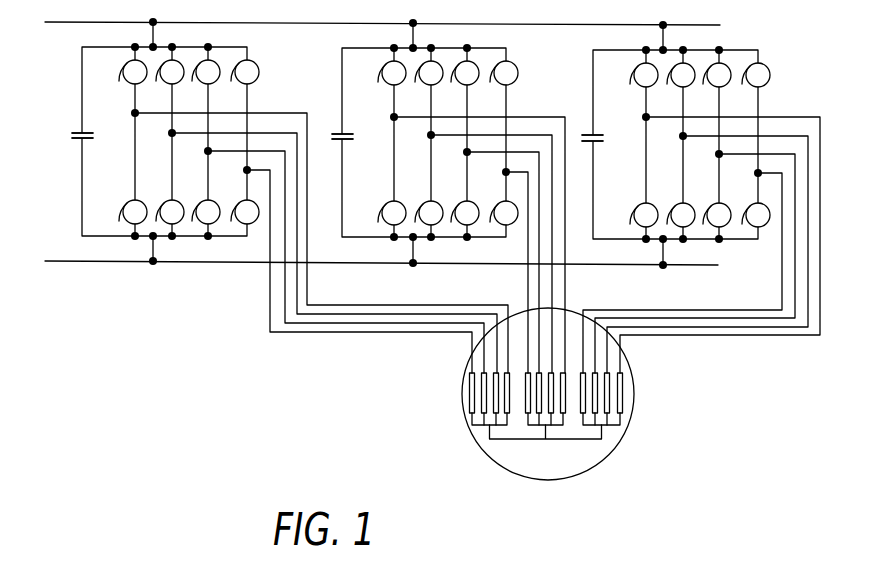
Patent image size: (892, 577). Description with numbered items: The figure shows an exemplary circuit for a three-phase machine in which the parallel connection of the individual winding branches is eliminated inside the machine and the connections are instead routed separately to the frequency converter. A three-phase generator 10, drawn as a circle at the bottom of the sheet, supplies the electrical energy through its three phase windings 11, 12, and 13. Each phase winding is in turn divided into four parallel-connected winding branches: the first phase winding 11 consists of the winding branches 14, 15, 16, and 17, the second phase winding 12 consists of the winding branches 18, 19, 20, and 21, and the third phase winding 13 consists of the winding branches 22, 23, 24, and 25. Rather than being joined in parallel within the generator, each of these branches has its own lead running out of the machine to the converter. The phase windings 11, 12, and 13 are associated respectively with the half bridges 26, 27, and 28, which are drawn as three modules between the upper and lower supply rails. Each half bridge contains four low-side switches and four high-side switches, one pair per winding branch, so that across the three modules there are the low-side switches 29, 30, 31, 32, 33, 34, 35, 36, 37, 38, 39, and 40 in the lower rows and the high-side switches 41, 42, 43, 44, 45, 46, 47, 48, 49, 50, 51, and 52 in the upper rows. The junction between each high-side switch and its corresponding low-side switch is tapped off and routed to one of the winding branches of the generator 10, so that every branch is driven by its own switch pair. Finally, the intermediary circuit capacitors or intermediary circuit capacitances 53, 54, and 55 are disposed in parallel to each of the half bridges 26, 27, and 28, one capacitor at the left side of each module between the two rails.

The three-phase generator 10 is at (730, 413).
The phase winding 11 is at (456, 422).
The phase winding 12 is at (554, 390).
The phase winding 13 is at (636, 417).
The winding branch 14 is at (470, 415).
The winding branch 15 is at (482, 402).
The winding branch 16 is at (494, 393).
The winding branch 17 is at (505, 387).
The winding branch 18 is at (563, 411).
The winding branch 19 is at (552, 371).
The winding branch 20 is at (539, 371).
The winding branch 21 is at (527, 414).
The winding branch 22 is at (586, 391).
The winding branch 23 is at (598, 398).
The winding branch 24 is at (610, 406).
The winding branch 25 is at (622, 413).
The half bridge 26 is at (165, 141).
The half bridge 27 is at (425, 143).
The half bridge 28 is at (676, 145).
The low-side switch 29 is at (129, 200).
The low-side switch 30 is at (165, 200).
The low-side switch 31 is at (202, 200).
The low-side switch 32 is at (241, 200).
The low-side switch 33 is at (388, 201).
The low-side switch 34 is at (425, 201).
The low-side switch 35 is at (461, 201).
The low-side switch 36 is at (500, 201).
The low-side switch 37 is at (639, 204).
The low-side switch 38 is at (676, 204).
The low-side switch 39 is at (713, 204).
The low-side switch 40 is at (752, 204).
The high-side switch 41 is at (128, 85).
The high-side switch 42 is at (165, 85).
The high-side switch 43 is at (202, 85).
The high-side switch 44 is at (241, 85).
The high-side switch 45 is at (387, 87).
The high-side switch 46 is at (425, 87).
The high-side switch 47 is at (461, 87).
The high-side switch 48 is at (500, 87).
The high-side switch 49 is at (639, 89).
The high-side switch 50 is at (676, 89).
The high-side switch 51 is at (713, 89).
The high-side switch 52 is at (752, 89).
The intermediary circuit capacitor 53 is at (84, 140).
The intermediary circuit capacitor 54 is at (344, 141).
The intermediary circuit capacitor 55 is at (595, 143).